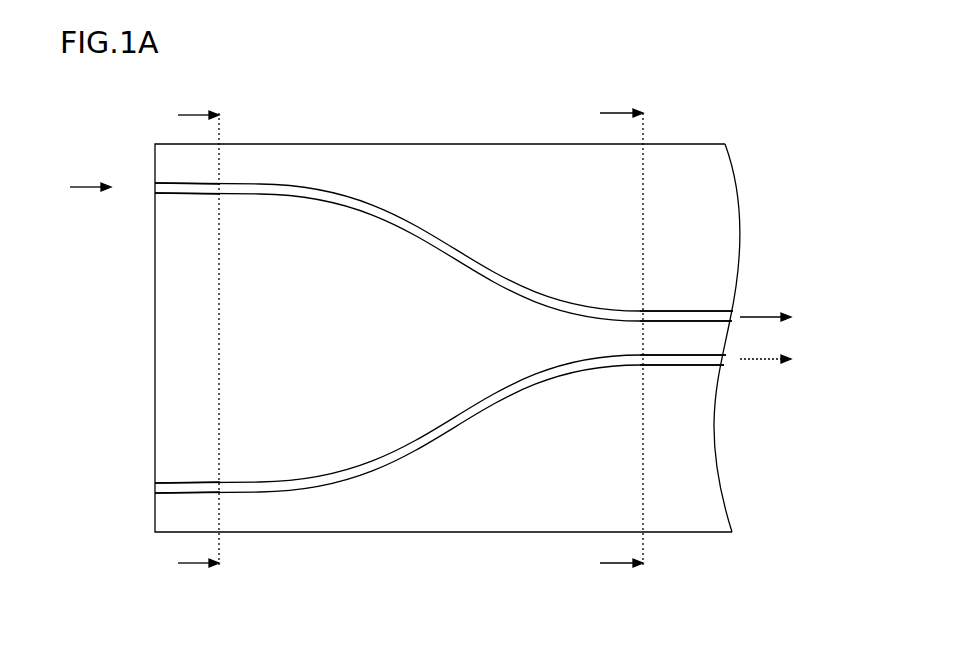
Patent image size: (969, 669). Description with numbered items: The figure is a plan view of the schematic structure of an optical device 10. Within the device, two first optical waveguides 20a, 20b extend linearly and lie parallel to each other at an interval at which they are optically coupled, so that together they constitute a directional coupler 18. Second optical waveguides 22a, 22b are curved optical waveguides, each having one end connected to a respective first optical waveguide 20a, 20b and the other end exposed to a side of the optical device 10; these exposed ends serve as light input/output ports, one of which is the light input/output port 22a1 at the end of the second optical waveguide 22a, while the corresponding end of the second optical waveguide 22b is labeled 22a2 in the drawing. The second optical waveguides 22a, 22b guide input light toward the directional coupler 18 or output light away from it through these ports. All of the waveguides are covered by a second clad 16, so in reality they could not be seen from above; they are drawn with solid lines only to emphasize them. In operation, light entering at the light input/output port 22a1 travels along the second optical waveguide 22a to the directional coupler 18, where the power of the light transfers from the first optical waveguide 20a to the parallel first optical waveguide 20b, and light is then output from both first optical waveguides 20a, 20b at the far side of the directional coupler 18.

The optical device 10 is at (650, 90).
The second clad 16 is at (690, 152).
The directional coupler 18 is at (847, 257).
The first optical waveguide 20a is at (688, 318).
The first optical waveguide 20b is at (688, 357).
The second optical waveguide 22a is at (362, 192).
The second optical waveguide 22b is at (362, 484).
The light input/output port 22a1 is at (148, 186).
The input end of second waveguide 22a2 is at (148, 491).